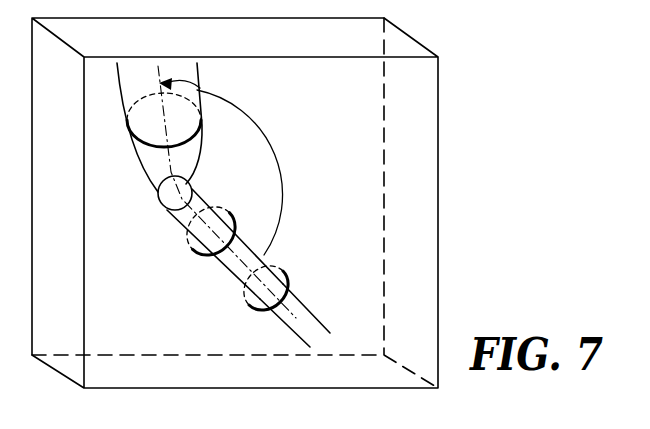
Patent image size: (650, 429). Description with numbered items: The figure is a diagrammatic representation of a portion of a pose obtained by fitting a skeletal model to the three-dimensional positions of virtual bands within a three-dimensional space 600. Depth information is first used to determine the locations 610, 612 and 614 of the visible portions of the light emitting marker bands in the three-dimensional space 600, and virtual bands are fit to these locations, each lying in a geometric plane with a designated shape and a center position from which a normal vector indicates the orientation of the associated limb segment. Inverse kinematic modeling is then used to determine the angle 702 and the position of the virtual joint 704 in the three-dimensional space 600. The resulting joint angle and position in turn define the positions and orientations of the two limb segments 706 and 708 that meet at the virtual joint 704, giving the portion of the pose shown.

The 3D space 600 is at (438, 136).
The location of visible portion of light emitting marker band 610 is at (198, 138).
The location of visible portion of light emitting marker band 612 is at (205, 265).
The location of visible portion of light emitting marker band 614 is at (292, 289).
The angle 702 is at (273, 153).
The virtual joint 704 is at (162, 206).
The limb segment 706 is at (203, 84).
The limb segment 708 is at (281, 328).